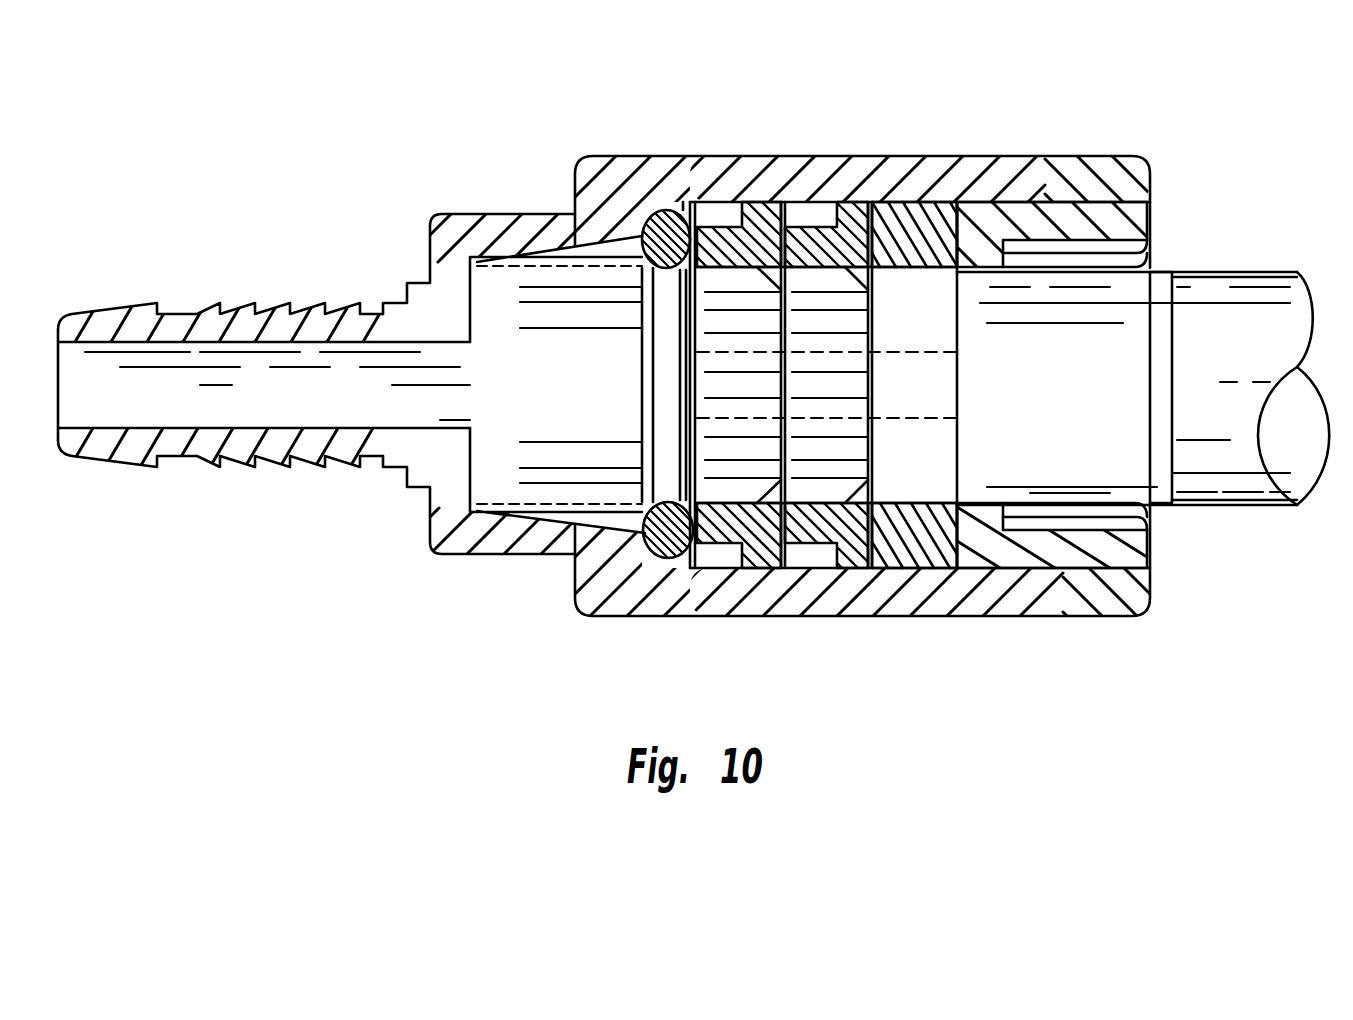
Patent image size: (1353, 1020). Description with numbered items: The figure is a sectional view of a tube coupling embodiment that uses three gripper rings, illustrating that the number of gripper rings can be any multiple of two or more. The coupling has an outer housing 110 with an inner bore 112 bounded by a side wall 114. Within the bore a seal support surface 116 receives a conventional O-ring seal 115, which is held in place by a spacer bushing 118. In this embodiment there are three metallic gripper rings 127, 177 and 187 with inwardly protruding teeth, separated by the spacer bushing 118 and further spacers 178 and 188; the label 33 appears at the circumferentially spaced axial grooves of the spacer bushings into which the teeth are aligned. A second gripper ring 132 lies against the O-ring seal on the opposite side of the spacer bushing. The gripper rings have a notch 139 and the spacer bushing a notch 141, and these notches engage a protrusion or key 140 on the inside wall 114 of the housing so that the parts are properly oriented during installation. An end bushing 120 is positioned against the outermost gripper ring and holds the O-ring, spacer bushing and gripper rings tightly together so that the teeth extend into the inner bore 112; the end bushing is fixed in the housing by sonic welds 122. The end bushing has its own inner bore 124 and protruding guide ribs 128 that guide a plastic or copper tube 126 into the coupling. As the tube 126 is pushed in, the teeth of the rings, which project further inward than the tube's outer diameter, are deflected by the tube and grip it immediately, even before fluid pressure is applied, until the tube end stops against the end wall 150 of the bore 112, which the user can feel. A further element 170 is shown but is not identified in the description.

The fingers 33 is at (747, 268).
The outer housing 110 is at (1067, 590).
The inner bore 112 is at (545, 512).
The side wall 114 is at (510, 507).
The O-ring seal 115 is at (652, 210).
The seal support surface 116 is at (628, 545).
The spacer bushing 118 is at (925, 203).
The end bushing 120 is at (1150, 200).
The sonic welds 122 is at (1130, 157).
The inner bore 124 is at (1147, 513).
The tube 126 is at (1282, 270).
The gripper ring 127 is at (865, 203).
The guide ribs 128 is at (1143, 254).
The gripper ring 132 is at (797, 568).
The notch 139 is at (782, 582).
The protrusion or key 140 is at (960, 570).
The notch 141 is at (860, 582).
The end wall 150 is at (482, 318).
The chamber 170 is at (732, 550).
The gripper ring 177 is at (768, 230).
The spacer 178 is at (827, 230).
The gripper ring 187 is at (683, 202).
The spacer 188 is at (742, 224).